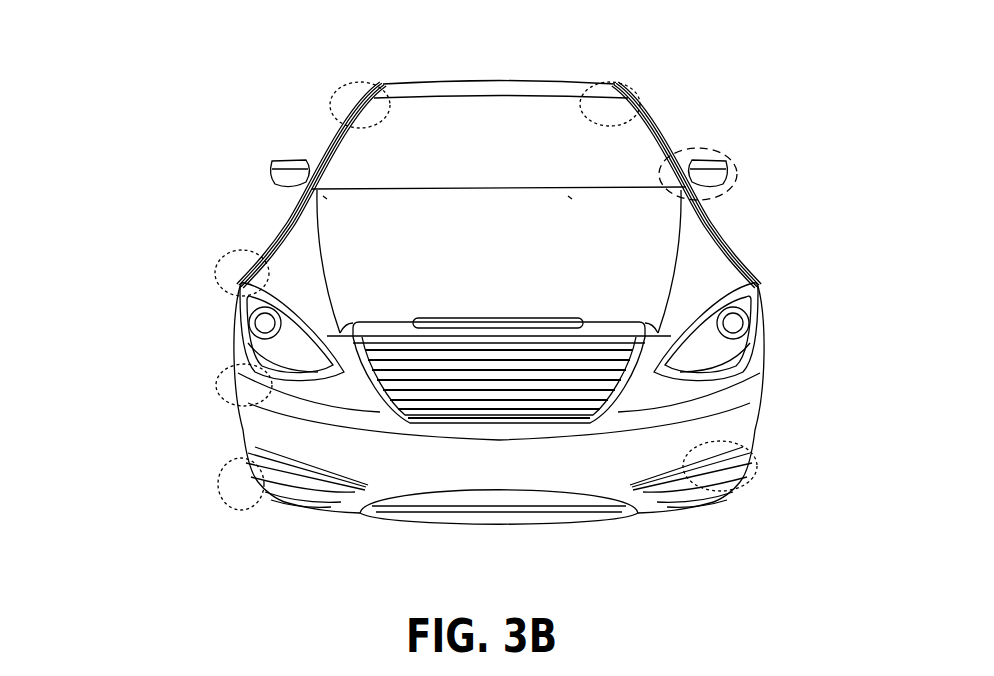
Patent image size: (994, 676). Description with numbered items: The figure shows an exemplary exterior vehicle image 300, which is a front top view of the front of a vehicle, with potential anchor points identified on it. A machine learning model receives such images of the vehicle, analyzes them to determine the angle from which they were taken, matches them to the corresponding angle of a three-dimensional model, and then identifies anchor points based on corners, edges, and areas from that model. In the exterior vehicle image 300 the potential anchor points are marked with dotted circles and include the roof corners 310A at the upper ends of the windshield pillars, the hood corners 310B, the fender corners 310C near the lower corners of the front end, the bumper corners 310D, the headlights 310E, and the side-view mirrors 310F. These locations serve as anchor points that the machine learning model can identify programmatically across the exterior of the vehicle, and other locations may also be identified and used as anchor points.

The exterior vehicle image 300 is at (286, 217).
The roof corners 310A is at (343, 99).
The hood corners 310B is at (233, 270).
The fender corners 310C is at (235, 483).
The bumper corners 310D is at (232, 398).
The headlights 310E is at (743, 362).
The side-view mirrors 310F is at (705, 157).